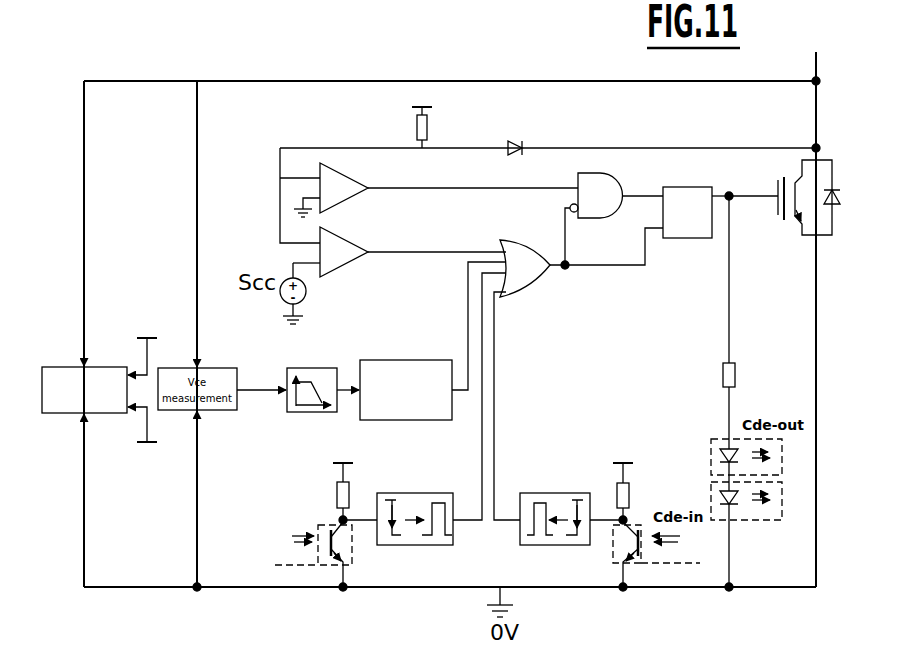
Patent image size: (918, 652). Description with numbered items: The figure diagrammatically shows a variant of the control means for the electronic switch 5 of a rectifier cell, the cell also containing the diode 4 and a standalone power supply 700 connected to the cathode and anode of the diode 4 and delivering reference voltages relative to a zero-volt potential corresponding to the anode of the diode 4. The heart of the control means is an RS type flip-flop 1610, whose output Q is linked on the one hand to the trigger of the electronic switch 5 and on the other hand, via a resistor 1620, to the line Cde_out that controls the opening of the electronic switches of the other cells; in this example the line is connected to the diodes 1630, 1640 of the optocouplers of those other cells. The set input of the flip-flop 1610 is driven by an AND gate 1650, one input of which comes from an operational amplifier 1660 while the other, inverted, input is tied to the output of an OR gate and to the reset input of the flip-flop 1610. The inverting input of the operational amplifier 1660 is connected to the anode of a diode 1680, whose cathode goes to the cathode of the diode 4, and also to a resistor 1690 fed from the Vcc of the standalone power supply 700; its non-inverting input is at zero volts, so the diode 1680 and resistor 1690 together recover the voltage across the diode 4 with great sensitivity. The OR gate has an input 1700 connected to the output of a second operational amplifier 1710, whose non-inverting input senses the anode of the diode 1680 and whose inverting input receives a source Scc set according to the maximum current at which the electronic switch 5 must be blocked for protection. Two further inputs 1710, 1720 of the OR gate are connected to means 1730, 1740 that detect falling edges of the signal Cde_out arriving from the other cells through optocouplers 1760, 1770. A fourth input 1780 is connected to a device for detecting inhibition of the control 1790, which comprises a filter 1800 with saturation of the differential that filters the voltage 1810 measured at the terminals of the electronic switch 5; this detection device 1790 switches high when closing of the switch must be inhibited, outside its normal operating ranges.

The standalone power supply 700 is at (57, 364).
The measured voltage 1810 is at (247, 386).
The filter 1800 is at (297, 413).
The device for detecting inhibition of the control 1790 is at (372, 359).
The fourth input of the OR gate 1780 is at (466, 262).
The operational amplifier / OR gate input 1710 is at (482, 448).
The input of the OR gate 1720 is at (495, 402).
The operational amplifier 1660 is at (355, 200).
The input of the OR gate 1700 is at (399, 254).
The resistor 1690 is at (417, 127).
The diode 1680 is at (511, 142).
The AND gate 1650 is at (596, 212).
The RS type flip-flop 1610 is at (695, 240).
The diode 4 is at (824, 158).
The electronic switch 5 is at (778, 186).
The resistor 1620 is at (737, 378).
The diode of optocoupler 1630 is at (722, 455).
The diode of optocoupler 1640 is at (722, 497).
The optocoupler 1760 is at (310, 562).
The means of detecting falling edges 1730 is at (396, 492).
The means of detecting falling edges 1740 is at (550, 492).
The optocoupler 1770 is at (615, 548).